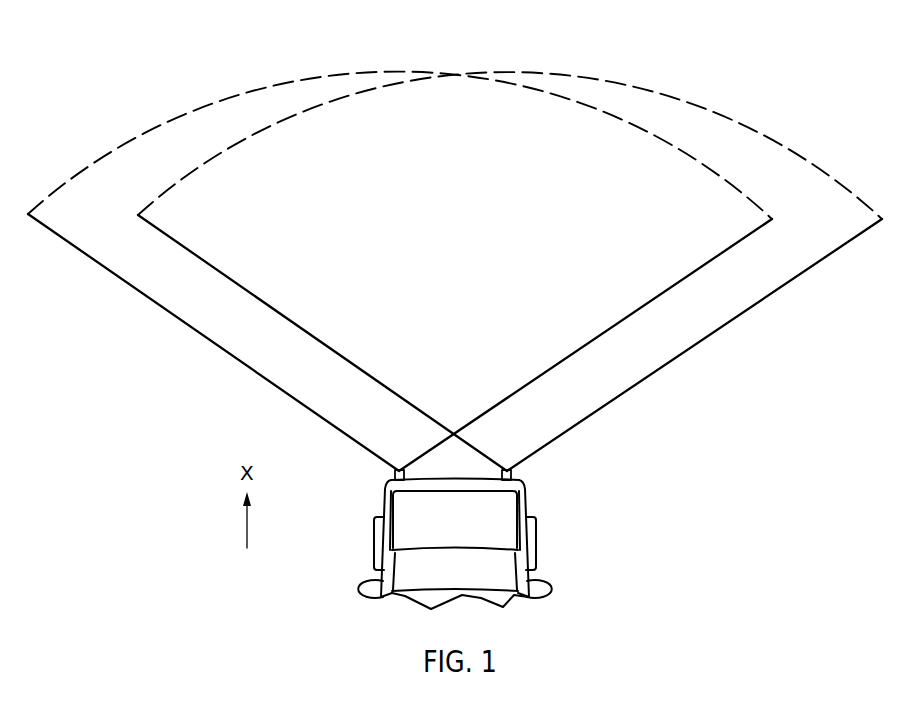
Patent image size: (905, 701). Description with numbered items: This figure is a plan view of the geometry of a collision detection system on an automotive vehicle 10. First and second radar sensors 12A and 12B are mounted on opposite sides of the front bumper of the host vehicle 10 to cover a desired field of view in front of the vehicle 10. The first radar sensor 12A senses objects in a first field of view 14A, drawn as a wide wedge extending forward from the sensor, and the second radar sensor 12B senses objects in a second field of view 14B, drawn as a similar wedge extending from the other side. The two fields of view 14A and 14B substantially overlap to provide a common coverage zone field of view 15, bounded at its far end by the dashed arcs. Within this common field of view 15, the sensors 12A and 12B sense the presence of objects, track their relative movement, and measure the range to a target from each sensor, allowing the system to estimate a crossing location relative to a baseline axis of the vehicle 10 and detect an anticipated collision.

The automotive vehicle 10 is at (526, 503).
The first radar sensor 12A is at (395, 477).
The second radar sensor 12B is at (512, 479).
The first field of view 14A is at (198, 333).
The second field of view 14B is at (727, 325).
The common coverage zone field of view 15 is at (451, 104).